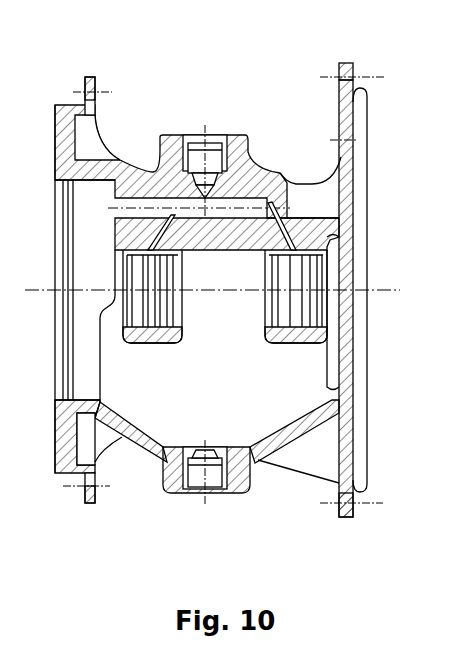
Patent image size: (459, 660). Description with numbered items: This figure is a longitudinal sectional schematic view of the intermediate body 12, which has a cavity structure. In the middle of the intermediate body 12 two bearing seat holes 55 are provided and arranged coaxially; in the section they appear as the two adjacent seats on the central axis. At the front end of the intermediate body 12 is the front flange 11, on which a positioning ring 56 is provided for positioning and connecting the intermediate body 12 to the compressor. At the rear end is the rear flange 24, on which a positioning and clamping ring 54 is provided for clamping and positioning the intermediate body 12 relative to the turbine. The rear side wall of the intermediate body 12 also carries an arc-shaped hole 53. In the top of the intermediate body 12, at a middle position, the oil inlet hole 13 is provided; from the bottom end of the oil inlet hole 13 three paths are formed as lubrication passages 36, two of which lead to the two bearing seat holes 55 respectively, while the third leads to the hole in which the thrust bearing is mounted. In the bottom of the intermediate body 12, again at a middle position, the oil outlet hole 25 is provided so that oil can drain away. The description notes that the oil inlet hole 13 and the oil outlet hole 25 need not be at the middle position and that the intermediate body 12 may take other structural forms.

The front flange 11 is at (97, 92).
The intermediate body 12 is at (125, 163).
The oil inlet hole 13 is at (206, 150).
The lubrication passages 36 is at (287, 182).
The positioning and clamping ring 54 is at (345, 140).
The arc-shaped hole 53 is at (355, 125).
The positioning ring 56 is at (78, 473).
The bearing seat holes 55 is at (160, 310).
The oil outlet hole 25 is at (193, 478).
The rear flange 24 is at (338, 522).